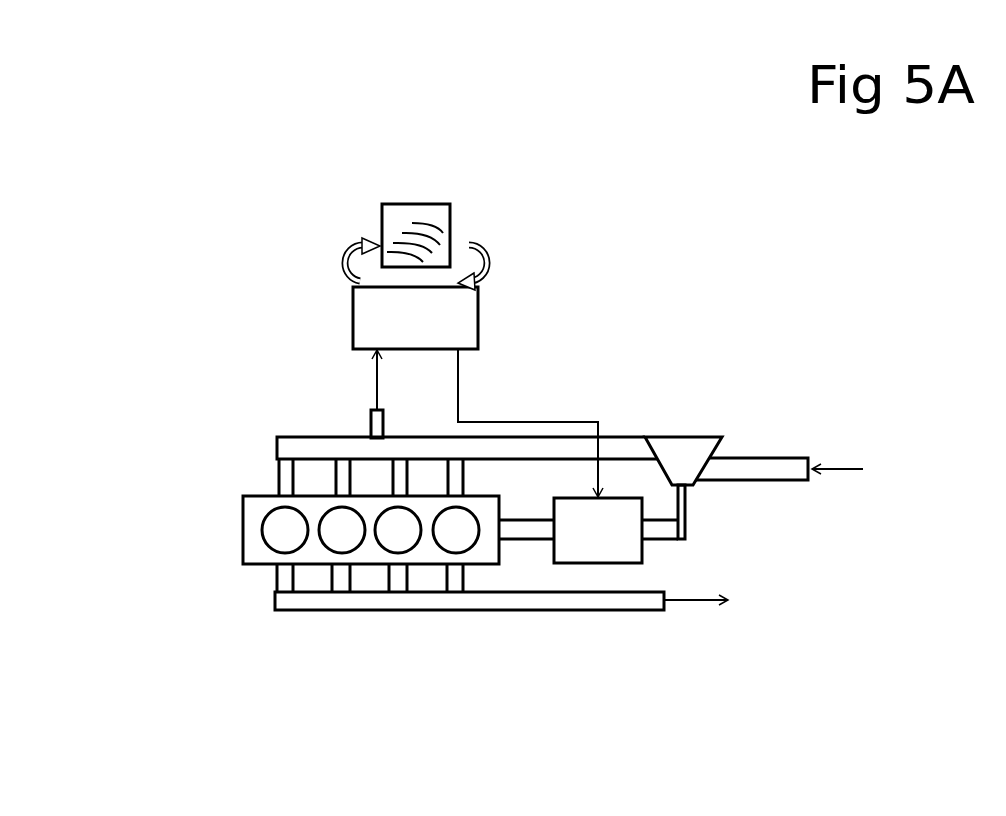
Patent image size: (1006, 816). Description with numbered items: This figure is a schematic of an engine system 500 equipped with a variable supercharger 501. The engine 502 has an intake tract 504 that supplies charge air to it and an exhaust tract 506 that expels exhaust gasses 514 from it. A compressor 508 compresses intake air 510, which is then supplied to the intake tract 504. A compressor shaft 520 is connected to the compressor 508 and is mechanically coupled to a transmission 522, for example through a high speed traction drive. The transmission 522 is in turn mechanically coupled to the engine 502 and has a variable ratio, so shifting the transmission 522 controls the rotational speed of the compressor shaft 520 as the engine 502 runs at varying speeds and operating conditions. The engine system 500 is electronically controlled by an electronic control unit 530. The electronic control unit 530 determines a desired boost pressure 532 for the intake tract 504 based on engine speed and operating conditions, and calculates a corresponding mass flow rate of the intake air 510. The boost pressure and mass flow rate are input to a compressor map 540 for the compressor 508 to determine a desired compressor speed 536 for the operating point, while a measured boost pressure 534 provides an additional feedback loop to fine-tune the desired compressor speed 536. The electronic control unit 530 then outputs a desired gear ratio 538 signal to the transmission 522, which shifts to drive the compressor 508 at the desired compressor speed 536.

The engine system 500 is at (146, 148).
The variable supercharger 501 is at (696, 541).
The engine 502 is at (287, 525).
The intake tract 504 is at (298, 452).
The exhaust tract 506 is at (298, 600).
The compressor 508 is at (675, 448).
The intake air 510 is at (845, 467).
The exhaust gasses 514 is at (683, 600).
The compressor shaft 520 is at (685, 520).
The transmission 522 is at (580, 545).
The electronic control unit 530 is at (468, 297).
The desired boost pressure 532 is at (366, 243).
The measured boost pressure 534 is at (376, 380).
The desired compressor speed 536 is at (468, 240).
The desired gear ratio 538 is at (552, 421).
The compressor map 540 is at (420, 213).